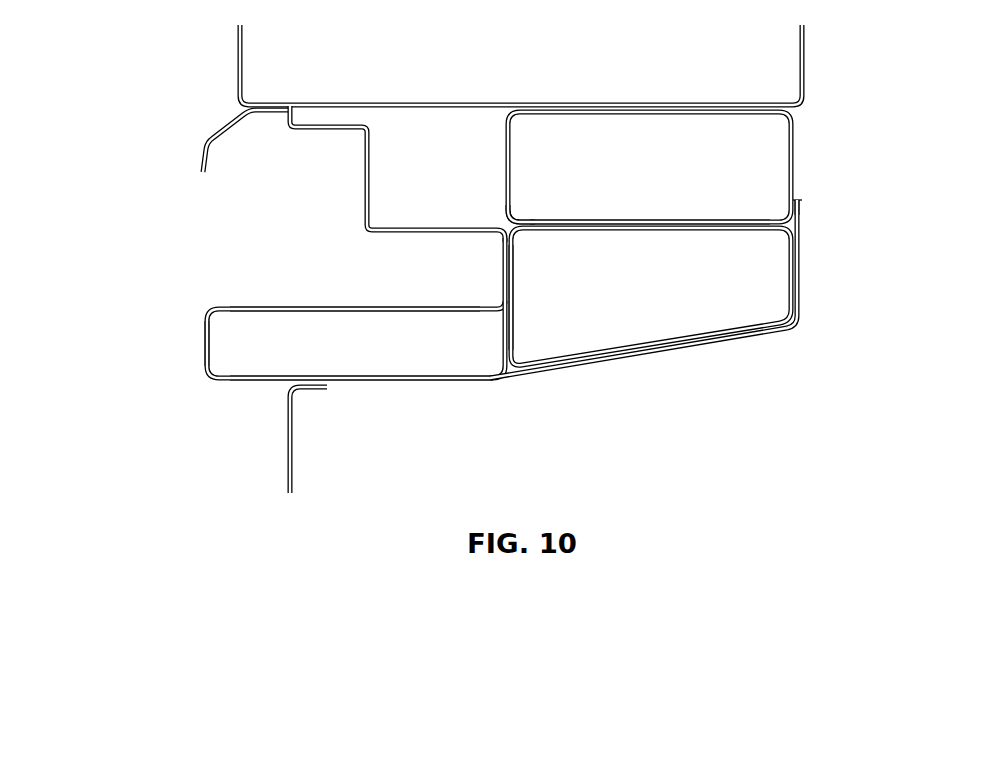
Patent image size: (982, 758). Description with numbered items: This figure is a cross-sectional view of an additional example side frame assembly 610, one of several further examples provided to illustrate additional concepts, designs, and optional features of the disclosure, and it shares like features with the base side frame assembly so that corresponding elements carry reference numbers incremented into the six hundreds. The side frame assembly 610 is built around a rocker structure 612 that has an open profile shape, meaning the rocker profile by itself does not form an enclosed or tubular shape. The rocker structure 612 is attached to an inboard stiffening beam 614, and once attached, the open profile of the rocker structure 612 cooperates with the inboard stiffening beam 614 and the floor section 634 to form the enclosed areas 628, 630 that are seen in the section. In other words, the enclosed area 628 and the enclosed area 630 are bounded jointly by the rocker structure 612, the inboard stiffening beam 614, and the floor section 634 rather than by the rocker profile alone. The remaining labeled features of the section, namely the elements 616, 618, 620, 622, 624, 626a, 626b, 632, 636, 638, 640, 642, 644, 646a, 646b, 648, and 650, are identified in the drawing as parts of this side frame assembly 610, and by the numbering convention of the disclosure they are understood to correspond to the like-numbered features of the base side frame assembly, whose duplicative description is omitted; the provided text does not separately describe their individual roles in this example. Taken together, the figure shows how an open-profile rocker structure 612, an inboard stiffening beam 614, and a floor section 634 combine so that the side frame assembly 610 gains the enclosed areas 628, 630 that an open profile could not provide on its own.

The side frame assembly 610 is at (134, 40).
The rocker structure 612 is at (422, 420).
The inboard stiffening beam 614 is at (684, 379).
The flange 616 is at (268, 103).
The bottom wall 618 is at (447, 385).
The end wall 620 is at (203, 347).
The connecting wall 622 is at (503, 266).
The upper wall 624 is at (247, 303).
The first leg 626a is at (200, 152).
The second leg 626b is at (553, 375).
The enclosed area 628 is at (446, 190).
The enclosed area 630 is at (365, 356).
The gap 632 is at (200, 237).
The floor section 634 is at (413, 103).
The post 636 is at (623, 103).
The sloped wall 638 is at (752, 332).
The inner wall 640 is at (517, 306).
The outer wall 642 is at (800, 278).
The divider wall 644 is at (612, 222).
The first corner 646a is at (530, 220).
The second corner 646b is at (802, 202).
The third cavity 648 is at (741, 187).
The fourth cavity 650 is at (741, 286).